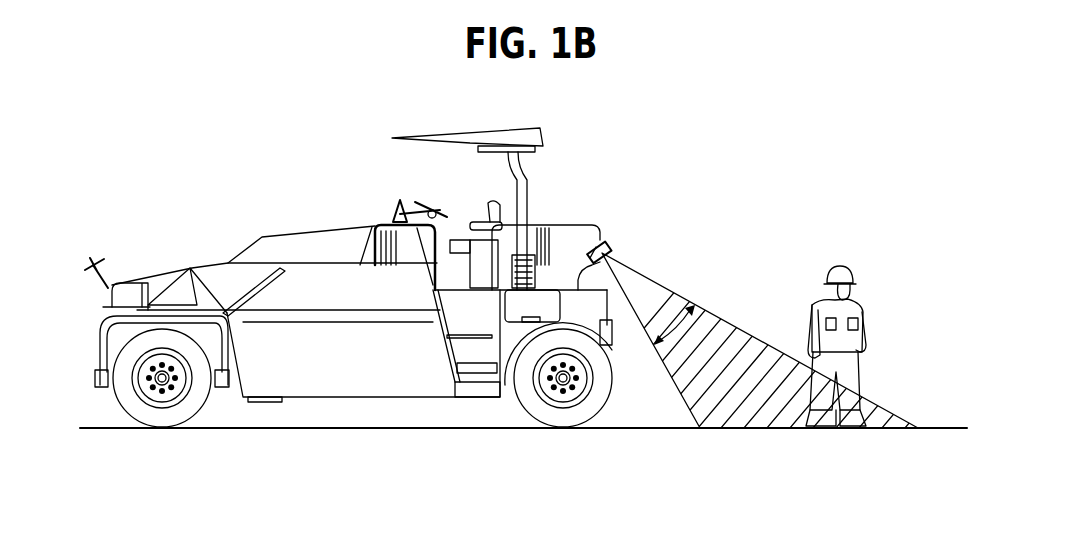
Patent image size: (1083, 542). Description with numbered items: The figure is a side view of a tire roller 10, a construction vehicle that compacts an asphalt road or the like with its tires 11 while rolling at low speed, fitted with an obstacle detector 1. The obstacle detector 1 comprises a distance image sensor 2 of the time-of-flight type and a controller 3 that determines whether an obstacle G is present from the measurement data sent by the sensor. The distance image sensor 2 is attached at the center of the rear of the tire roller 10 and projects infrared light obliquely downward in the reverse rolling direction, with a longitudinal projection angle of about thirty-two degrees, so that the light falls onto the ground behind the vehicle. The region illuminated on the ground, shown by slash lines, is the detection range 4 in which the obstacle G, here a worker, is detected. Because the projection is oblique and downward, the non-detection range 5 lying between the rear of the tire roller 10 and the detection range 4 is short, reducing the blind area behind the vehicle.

The obstacle detector 1 is at (610, 239).
The distance image sensor 2 is at (612, 248).
The controller 3 is at (404, 190).
The detection range 4 is at (740, 342).
The non-detection range 5 is at (652, 405).
The tire roller 10 is at (292, 211).
The tires 11 is at (165, 420).
The obstacle G is at (862, 313).